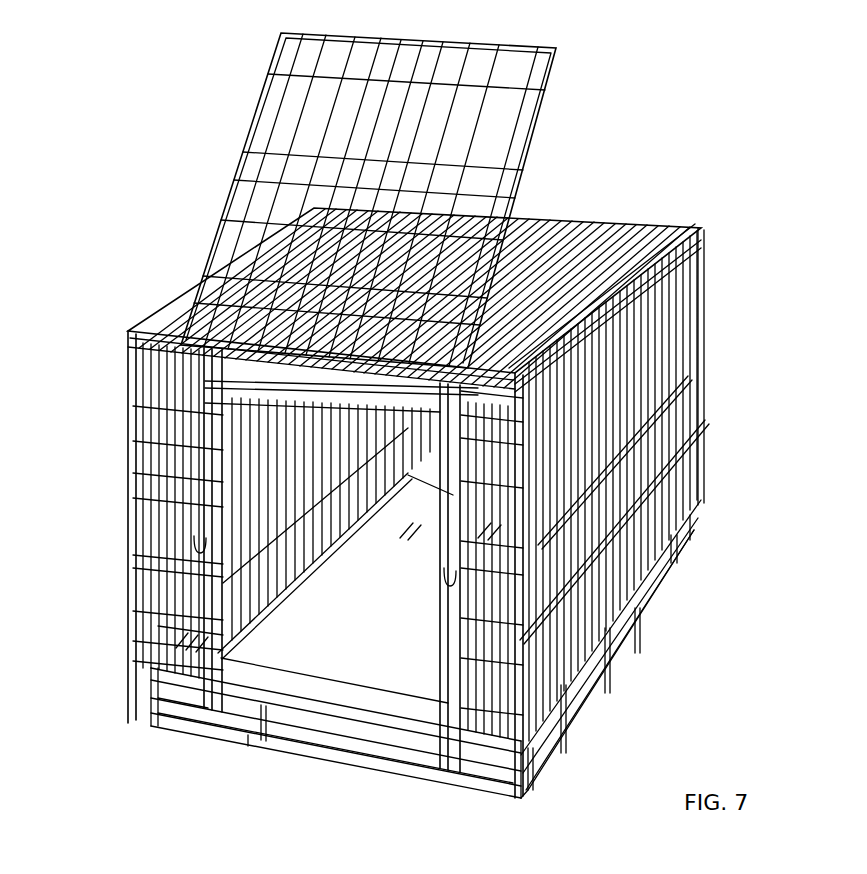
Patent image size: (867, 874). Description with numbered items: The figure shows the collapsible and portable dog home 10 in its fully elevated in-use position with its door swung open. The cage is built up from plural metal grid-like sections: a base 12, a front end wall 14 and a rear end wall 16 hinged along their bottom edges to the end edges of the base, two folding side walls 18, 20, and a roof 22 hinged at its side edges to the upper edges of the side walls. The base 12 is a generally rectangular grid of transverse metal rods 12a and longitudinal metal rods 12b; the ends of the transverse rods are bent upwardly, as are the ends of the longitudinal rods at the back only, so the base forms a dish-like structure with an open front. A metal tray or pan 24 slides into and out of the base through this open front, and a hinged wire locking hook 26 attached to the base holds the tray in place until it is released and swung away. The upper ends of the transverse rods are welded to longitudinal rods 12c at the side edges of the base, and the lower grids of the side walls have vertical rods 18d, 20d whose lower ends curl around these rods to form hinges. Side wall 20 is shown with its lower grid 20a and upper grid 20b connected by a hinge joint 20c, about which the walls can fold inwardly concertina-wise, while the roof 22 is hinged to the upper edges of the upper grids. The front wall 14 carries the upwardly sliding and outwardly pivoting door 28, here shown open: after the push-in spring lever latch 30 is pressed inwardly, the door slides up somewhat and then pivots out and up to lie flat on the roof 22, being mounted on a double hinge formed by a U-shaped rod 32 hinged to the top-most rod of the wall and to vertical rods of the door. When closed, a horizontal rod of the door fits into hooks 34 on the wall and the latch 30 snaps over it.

The dog home 10 is at (175, 240).
The base 12 is at (333, 756).
The transverse metal rods 12a is at (145, 692).
The longitudinal metal rods 12b is at (240, 735).
The longitudinal rods 12c is at (160, 623).
The end wall 14 is at (190, 558).
The end wall 16 is at (412, 448).
The side wall 18 is at (125, 515).
The vertical rods 18d is at (255, 563).
The side wall 20 is at (708, 357).
The lower grid 20a is at (665, 478).
The upper grid 20b is at (660, 298).
The hinge joint 20c is at (660, 398).
The vertical rods 20d is at (655, 578).
The roof 22 is at (585, 238).
The tray 24 is at (362, 647).
The locking hook 26 is at (180, 720).
The door 28 is at (256, 91).
The latch 30 is at (180, 460).
The U-shaped rod 32 is at (200, 353).
The hooks 34 is at (185, 538).